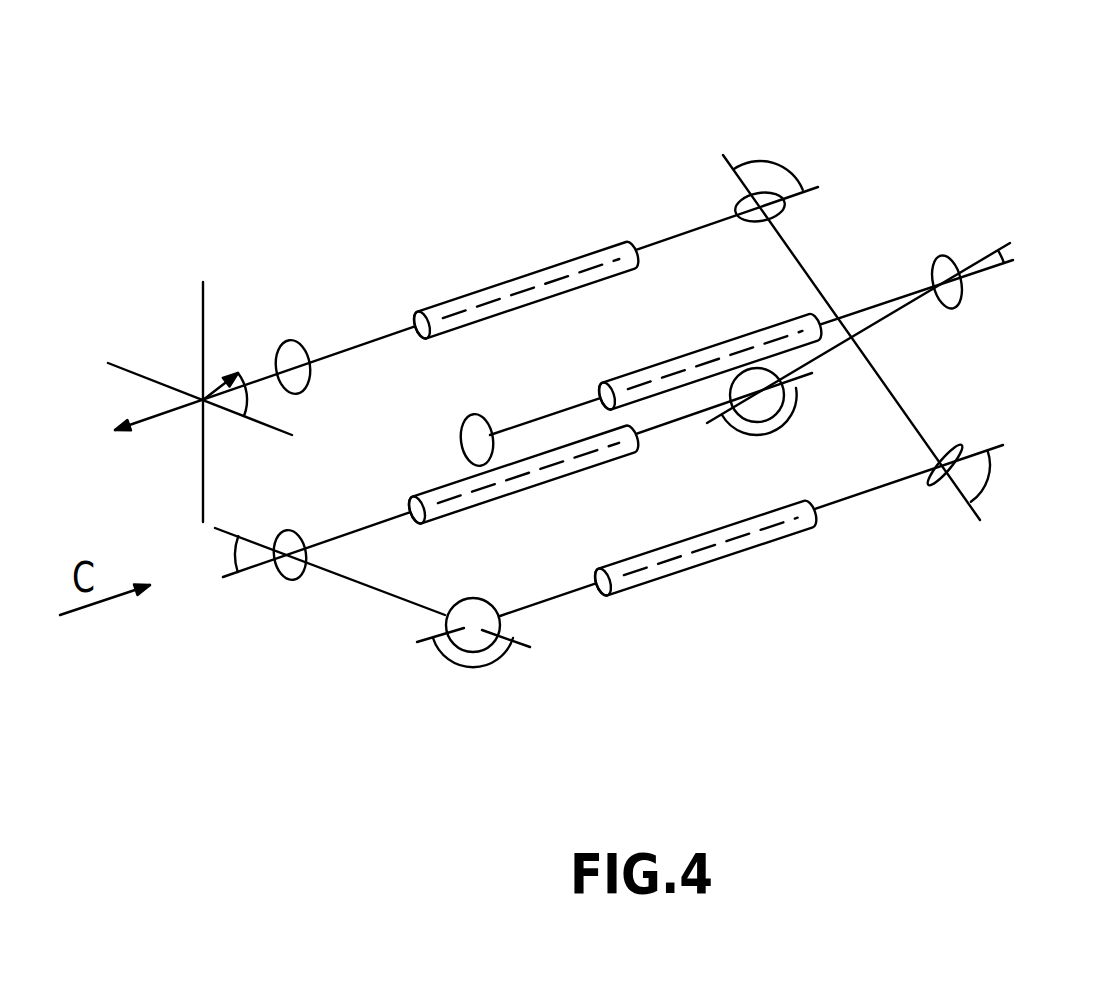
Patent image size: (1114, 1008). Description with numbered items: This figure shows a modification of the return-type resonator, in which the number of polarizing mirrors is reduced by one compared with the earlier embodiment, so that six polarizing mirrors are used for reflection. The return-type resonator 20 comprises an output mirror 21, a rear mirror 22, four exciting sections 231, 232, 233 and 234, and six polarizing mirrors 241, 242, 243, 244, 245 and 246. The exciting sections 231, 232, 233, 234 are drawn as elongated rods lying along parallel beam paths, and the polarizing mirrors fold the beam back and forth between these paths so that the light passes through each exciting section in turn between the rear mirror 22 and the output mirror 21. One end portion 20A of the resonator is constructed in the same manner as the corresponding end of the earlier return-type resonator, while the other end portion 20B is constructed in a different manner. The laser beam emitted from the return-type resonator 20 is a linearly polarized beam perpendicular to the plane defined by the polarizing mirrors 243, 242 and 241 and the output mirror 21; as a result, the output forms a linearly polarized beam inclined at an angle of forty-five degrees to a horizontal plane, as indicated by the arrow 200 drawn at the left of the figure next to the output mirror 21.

The return-type resonator 20 is at (975, 163).
The one end portion 20A is at (845, 283).
The other end portion 20B is at (392, 620).
The output mirror 21 is at (295, 343).
The rear mirror 22 is at (470, 427).
The arrow 200 is at (188, 413).
The exciting section 231 is at (547, 268).
The exciting section 232 is at (653, 362).
The exciting section 233 is at (589, 470).
The exciting section 234 is at (717, 560).
The polarizing mirror 241 is at (786, 208).
The polarizing mirror 242 is at (960, 447).
The polarizing mirror 243 is at (460, 603).
The polarizing mirror 244 is at (307, 580).
The polarizing mirror 245 is at (726, 390).
The polarizing mirror 246 is at (945, 307).